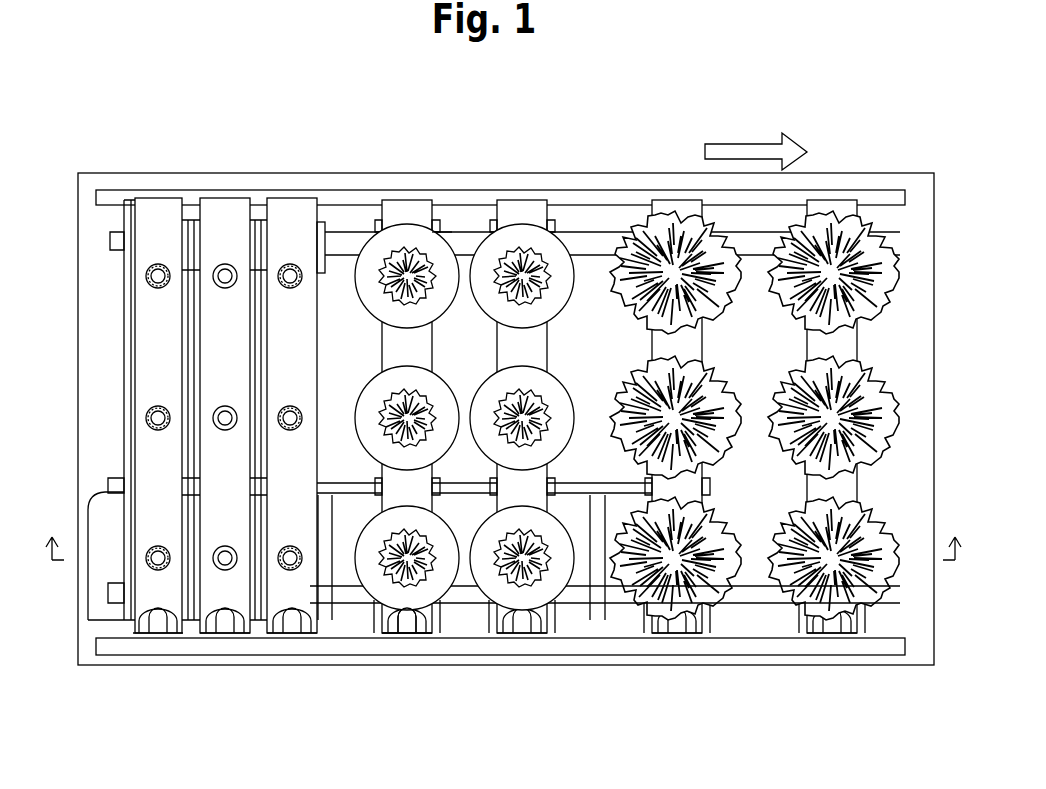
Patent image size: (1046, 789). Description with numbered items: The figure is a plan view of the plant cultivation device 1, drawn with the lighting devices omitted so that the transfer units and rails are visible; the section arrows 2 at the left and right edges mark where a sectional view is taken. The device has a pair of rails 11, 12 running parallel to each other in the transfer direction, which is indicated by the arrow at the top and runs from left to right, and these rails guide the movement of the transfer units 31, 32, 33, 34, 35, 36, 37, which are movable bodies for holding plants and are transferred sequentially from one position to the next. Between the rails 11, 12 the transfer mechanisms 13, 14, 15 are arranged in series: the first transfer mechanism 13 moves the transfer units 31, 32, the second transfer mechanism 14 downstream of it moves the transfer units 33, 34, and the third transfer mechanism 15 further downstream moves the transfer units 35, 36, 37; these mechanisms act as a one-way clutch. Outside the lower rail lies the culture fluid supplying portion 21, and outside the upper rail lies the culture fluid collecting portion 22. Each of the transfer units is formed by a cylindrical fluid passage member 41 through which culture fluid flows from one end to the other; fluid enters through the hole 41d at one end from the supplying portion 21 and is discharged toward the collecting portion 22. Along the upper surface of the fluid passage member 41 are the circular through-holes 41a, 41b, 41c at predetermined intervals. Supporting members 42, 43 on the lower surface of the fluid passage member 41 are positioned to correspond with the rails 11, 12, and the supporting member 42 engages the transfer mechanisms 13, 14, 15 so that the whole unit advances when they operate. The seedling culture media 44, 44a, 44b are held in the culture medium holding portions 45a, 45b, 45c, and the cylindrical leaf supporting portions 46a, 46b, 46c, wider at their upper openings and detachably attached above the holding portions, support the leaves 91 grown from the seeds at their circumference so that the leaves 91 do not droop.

The plant cultivation device 1 is at (833, 115).
The section line 2 is at (503, 531).
The rail 11 is at (755, 607).
The rail 12 is at (593, 232).
The first transfer mechanism 13 is at (88, 605).
The second transfer mechanism 14 is at (333, 497).
The third transfer mechanism 15 is at (600, 621).
The culture fluid supplying portion 21 is at (868, 657).
The culture fluid collecting portion 22 is at (887, 192).
The transfer unit 31 is at (152, 198).
The transfer unit 32 is at (232, 198).
The transfer unit 33 is at (290, 198).
The transfer unit 34 is at (393, 200).
The transfer unit 35 is at (522, 200).
The transfer unit 36 is at (665, 213).
The transfer unit 37 is at (830, 213).
The fluid passage member 41 is at (268, 607).
The through-hole 41a is at (290, 571).
The through-hole 41b is at (298, 410).
The through-hole 41c is at (300, 282).
The hole 41d is at (392, 614).
The supporting member 42 is at (437, 600).
The supporting member 43 is at (440, 232).
The seedling culture medium 44 is at (158, 262).
The seedling culture medium 44a is at (166, 637).
The seedling culture medium 44b is at (162, 405).
The culture medium holding portion 45a is at (150, 571).
The culture medium holding portion 45b is at (152, 428).
The culture medium holding portion 45c is at (150, 286).
The leaf supporting portion 46a is at (556, 607).
The leaf supporting portion 46b is at (560, 395).
The leaf supporting portion 46c is at (553, 302).
The leaves 91 is at (870, 515).